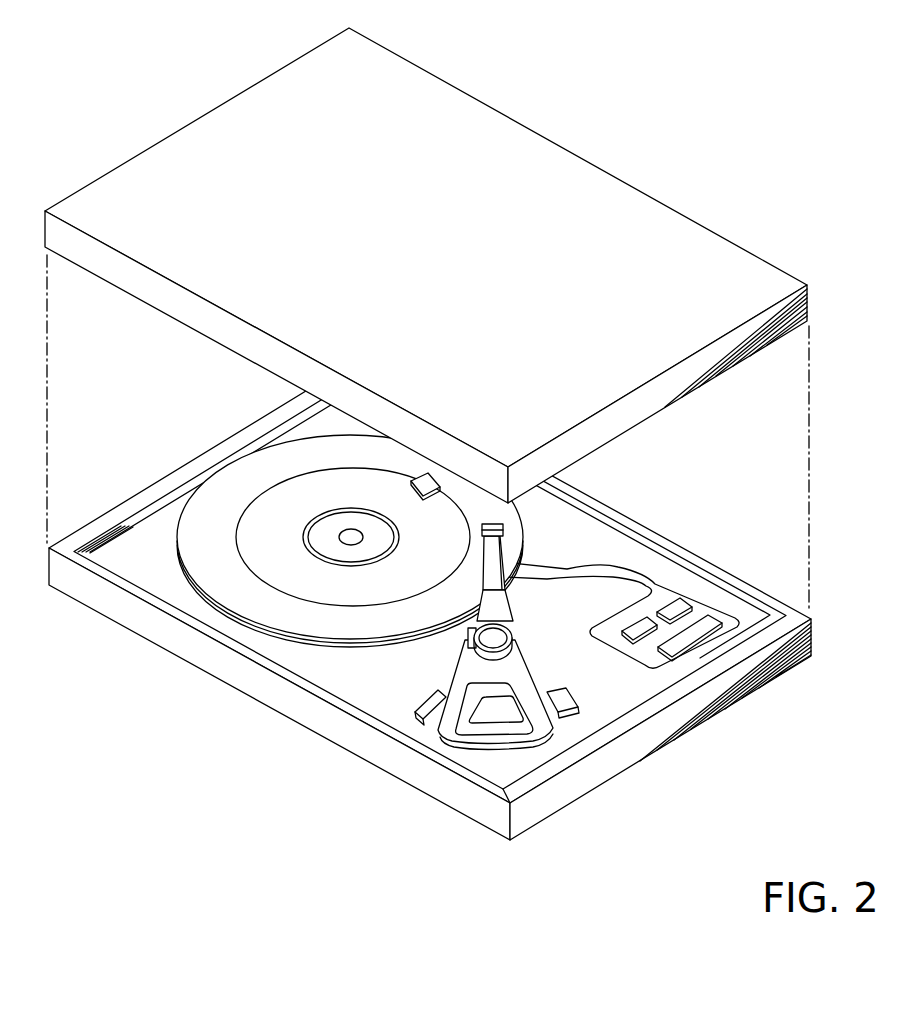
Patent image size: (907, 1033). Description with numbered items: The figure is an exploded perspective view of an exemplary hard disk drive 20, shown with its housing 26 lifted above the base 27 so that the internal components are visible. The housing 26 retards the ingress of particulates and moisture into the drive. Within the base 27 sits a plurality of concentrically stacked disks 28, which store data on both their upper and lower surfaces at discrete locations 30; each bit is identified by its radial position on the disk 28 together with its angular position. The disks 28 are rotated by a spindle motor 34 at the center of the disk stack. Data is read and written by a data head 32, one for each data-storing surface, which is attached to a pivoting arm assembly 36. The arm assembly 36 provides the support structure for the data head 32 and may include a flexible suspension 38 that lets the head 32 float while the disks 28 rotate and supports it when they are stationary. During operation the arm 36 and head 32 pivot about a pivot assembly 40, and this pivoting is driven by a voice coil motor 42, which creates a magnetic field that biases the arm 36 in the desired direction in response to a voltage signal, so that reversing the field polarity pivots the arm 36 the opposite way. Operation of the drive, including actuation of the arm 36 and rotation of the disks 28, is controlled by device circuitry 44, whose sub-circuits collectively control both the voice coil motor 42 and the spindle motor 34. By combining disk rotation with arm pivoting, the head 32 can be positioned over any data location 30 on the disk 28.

The hard disk drive 20 is at (695, 125).
The housing 26 is at (728, 260).
The base 27 is at (622, 755).
The disk 28 is at (290, 622).
The data location 30 is at (411, 480).
The data head 32 is at (503, 521).
The spindle motor 34 is at (330, 541).
The arm assembly 36 is at (528, 675).
The flexible suspension 38 is at (498, 557).
The pivot assembly 40 is at (468, 645).
The voice coil motor 42 is at (563, 707).
The device circuitry 44 is at (700, 610).